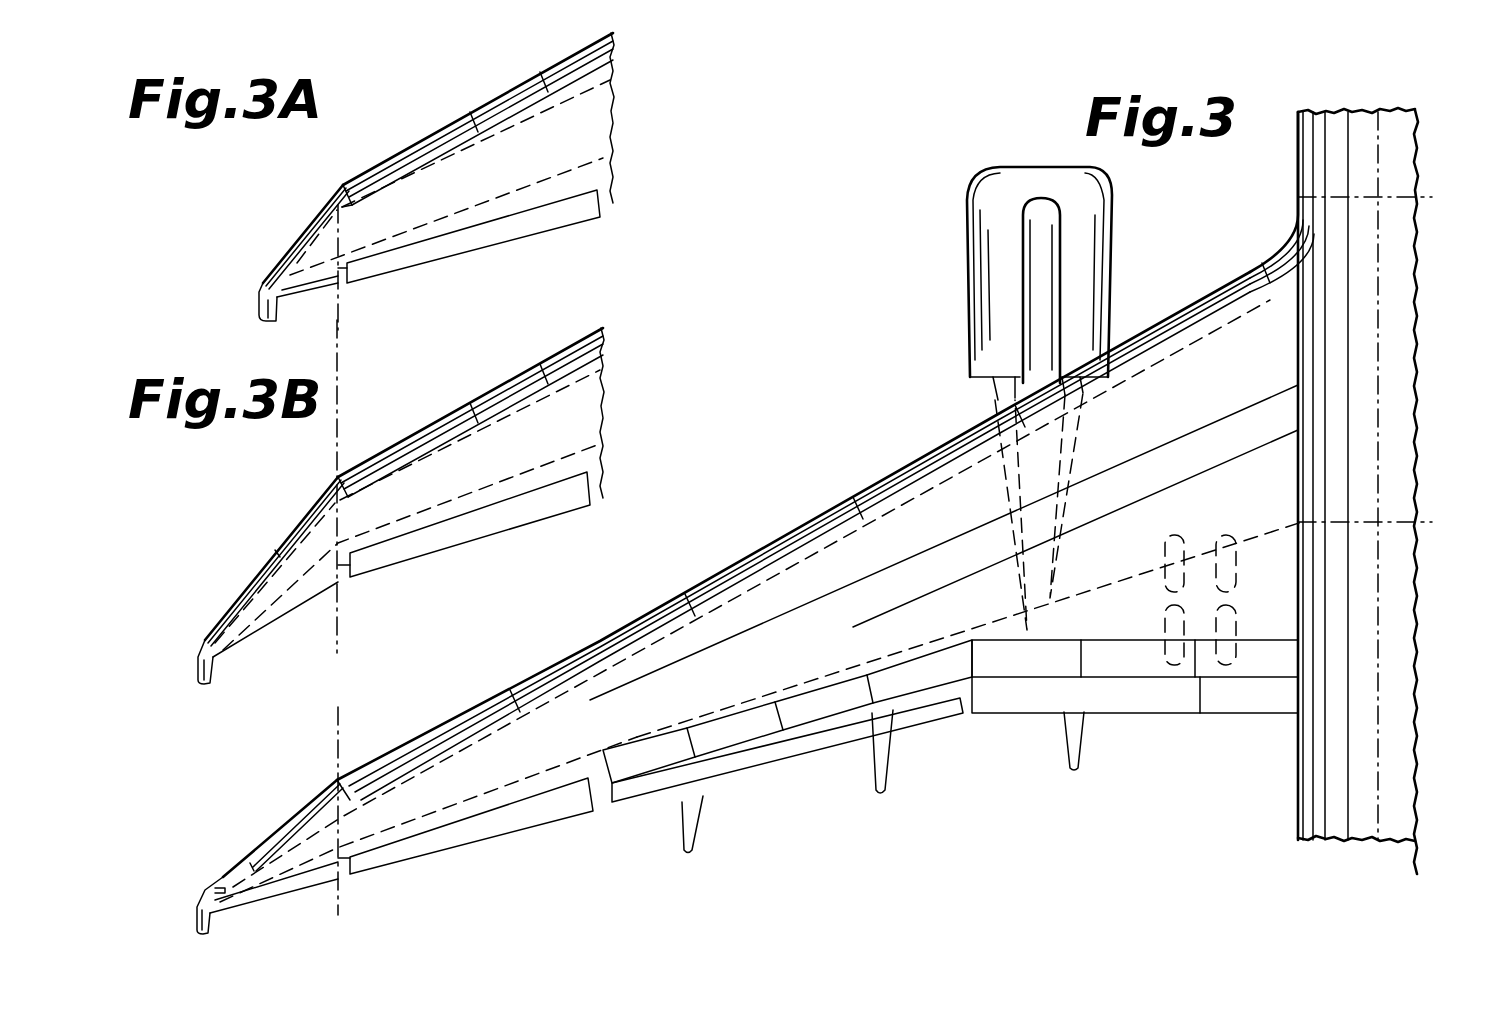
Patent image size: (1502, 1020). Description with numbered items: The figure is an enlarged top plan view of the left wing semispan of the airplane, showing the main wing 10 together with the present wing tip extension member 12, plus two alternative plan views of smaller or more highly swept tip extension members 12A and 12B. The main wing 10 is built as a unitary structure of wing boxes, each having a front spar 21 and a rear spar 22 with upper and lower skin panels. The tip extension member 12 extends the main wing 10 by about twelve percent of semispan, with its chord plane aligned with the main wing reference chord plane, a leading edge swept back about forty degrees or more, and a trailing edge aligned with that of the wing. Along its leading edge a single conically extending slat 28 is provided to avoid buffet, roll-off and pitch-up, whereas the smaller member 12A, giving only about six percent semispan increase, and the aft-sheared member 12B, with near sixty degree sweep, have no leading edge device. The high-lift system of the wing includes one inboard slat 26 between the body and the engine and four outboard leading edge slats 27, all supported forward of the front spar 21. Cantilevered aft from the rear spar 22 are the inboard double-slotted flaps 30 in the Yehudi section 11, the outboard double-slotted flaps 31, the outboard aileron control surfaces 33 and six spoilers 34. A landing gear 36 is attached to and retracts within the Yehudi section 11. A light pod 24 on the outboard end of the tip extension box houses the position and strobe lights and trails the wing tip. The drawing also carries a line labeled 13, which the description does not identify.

In FIG. 3, the main wing 10 is at (724, 551).
In FIG. 3, the Yehudi section 11 is at (1232, 777).
In FIG. 3, the wing tip extension member 12 is at (224, 848).
In FIG. 3A, the wing tip extension member 12A is at (312, 217).
In FIG. 3B, the wing tip extension member 12B is at (272, 552).
In FIG. 3A, the joint line 13 is at (350, 263).
In FIG. 3B, the joint line 13 is at (352, 553).
In FIG. 3, the joint line 13 is at (350, 873).
In FIG. 3, the front spar 21 is at (582, 706).
In FIG. 3, the rear spar 22 is at (530, 761).
In FIG. 3A, the light pod 24 is at (263, 312).
In FIG. 3B, the light pod 24 is at (198, 670).
In FIG. 3, the light pod 24 is at (195, 913).
In FIG. 3, the inboard slat 26 is at (1187, 313).
In FIG. 3A, the outboard leading edge slats 27 is at (474, 74).
In FIG. 3B, the outboard leading edge slats 27 is at (540, 370).
In FIG. 3, the outboard leading edge slats 27 is at (903, 473).
In FIG. 3, the leading edge slat 28 is at (277, 830).
In FIG. 3, the double-slotted flaps 30 is at (1165, 700).
In FIG. 3, the double-slotted flaps 31 is at (818, 750).
In FIG. 3A, the outboard aileron control surfaces 33 is at (497, 237).
In FIG. 3B, the outboard aileron control surfaces 33 is at (475, 540).
In FIG. 3, the outboard aileron control surfaces 33 is at (503, 820).
In FIG. 3, the spoilers 34 is at (660, 737).
In FIG. 3, the landing gear 36 is at (1165, 545).